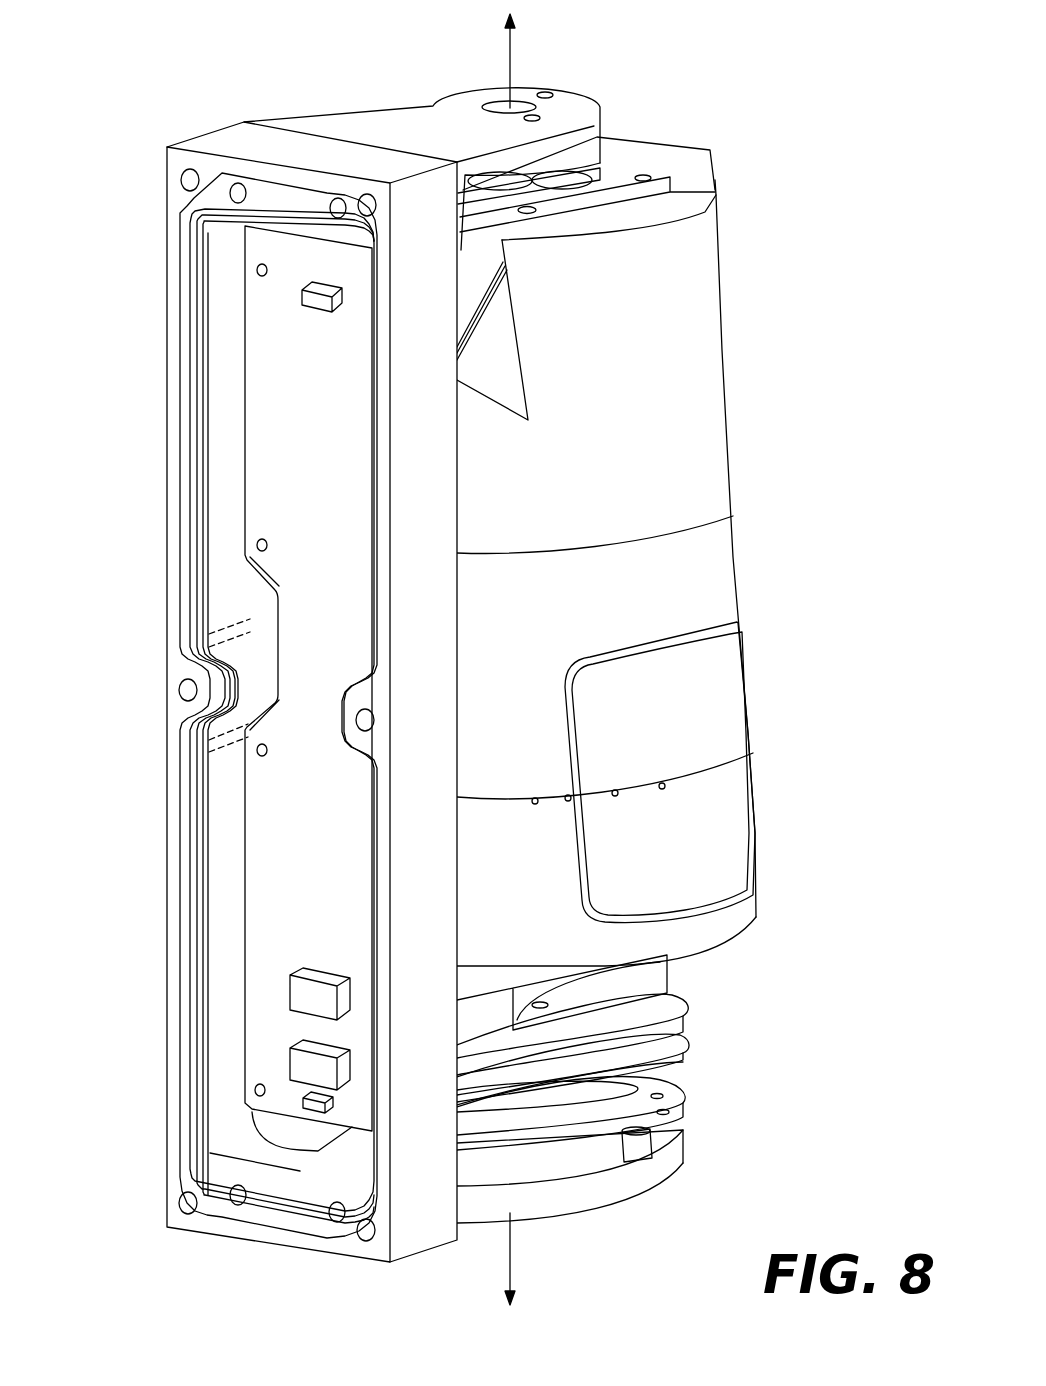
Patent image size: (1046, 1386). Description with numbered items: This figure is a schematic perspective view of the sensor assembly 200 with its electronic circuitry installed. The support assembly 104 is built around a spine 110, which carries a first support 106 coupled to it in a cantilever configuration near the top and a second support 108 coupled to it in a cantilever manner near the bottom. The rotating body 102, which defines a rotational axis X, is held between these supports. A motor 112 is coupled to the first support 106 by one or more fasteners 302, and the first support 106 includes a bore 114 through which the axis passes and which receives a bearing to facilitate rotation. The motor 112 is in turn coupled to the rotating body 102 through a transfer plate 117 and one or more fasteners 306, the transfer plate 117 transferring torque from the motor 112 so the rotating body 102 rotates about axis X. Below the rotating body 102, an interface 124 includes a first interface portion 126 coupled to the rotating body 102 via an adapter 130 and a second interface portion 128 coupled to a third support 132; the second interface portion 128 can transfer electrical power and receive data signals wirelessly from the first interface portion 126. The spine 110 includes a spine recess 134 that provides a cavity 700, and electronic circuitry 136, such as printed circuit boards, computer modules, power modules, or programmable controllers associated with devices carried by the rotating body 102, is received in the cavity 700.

The sensor assembly 200 is at (864, 99).
The support assembly 104 is at (142, 225).
The first support 106 is at (402, 135).
The spine 110 is at (237, 143).
The spine recess 134 is at (293, 338).
The electronic circuitry 136 is at (333, 430).
The cavity 700 is at (293, 477).
The rotating body 102 is at (723, 358).
The fasteners 302 is at (583, 93).
The bore 114 is at (492, 106).
The motor 112 is at (600, 133).
The transfer plate 117 is at (613, 182).
The fasteners 306 is at (653, 175).
The second support 108 is at (488, 1018).
The adapter 130 is at (683, 1003).
The first interface portion 126 is at (700, 1030).
The second interface portion 128 is at (700, 1116).
The interface 124 is at (720, 1083).
The third support 132 is at (663, 1165).